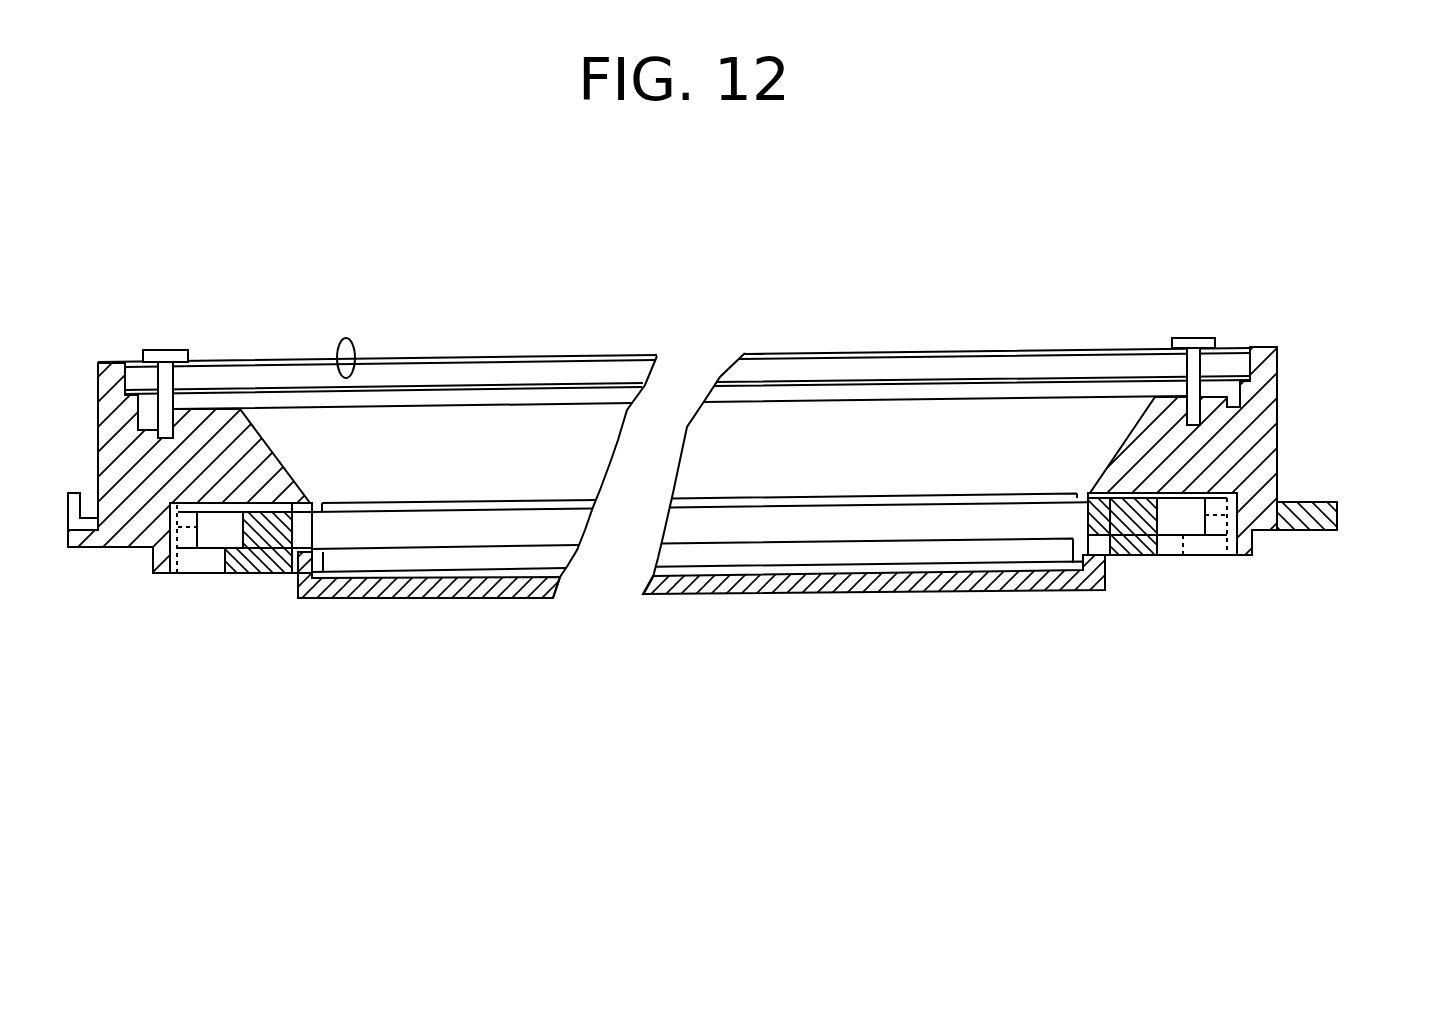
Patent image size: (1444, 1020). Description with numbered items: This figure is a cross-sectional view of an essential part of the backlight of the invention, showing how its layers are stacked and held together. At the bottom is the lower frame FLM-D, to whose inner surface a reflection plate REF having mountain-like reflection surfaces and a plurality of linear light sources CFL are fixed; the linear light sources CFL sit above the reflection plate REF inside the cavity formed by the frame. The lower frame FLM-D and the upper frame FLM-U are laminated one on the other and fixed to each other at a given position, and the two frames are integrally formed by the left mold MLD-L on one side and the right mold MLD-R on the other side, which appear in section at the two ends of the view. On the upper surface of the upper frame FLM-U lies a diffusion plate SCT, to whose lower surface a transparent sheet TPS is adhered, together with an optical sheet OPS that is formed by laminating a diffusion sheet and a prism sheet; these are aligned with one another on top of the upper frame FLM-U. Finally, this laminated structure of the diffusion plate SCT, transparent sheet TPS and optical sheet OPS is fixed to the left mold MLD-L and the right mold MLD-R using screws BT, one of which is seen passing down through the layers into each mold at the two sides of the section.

The screw BT is at (158, 350).
The optical sheet OPS is at (346, 338).
The diffusion plate SCT is at (535, 378).
The transparent sheet TPS is at (800, 378).
The upper frame FLM-U is at (1015, 392).
The right mold MLD-R is at (1250, 443).
The left mold MLD-L is at (120, 500).
The lower frame FLM-D is at (357, 600).
The reflection plate REF is at (767, 500).
The linear light source CFL is at (923, 523).